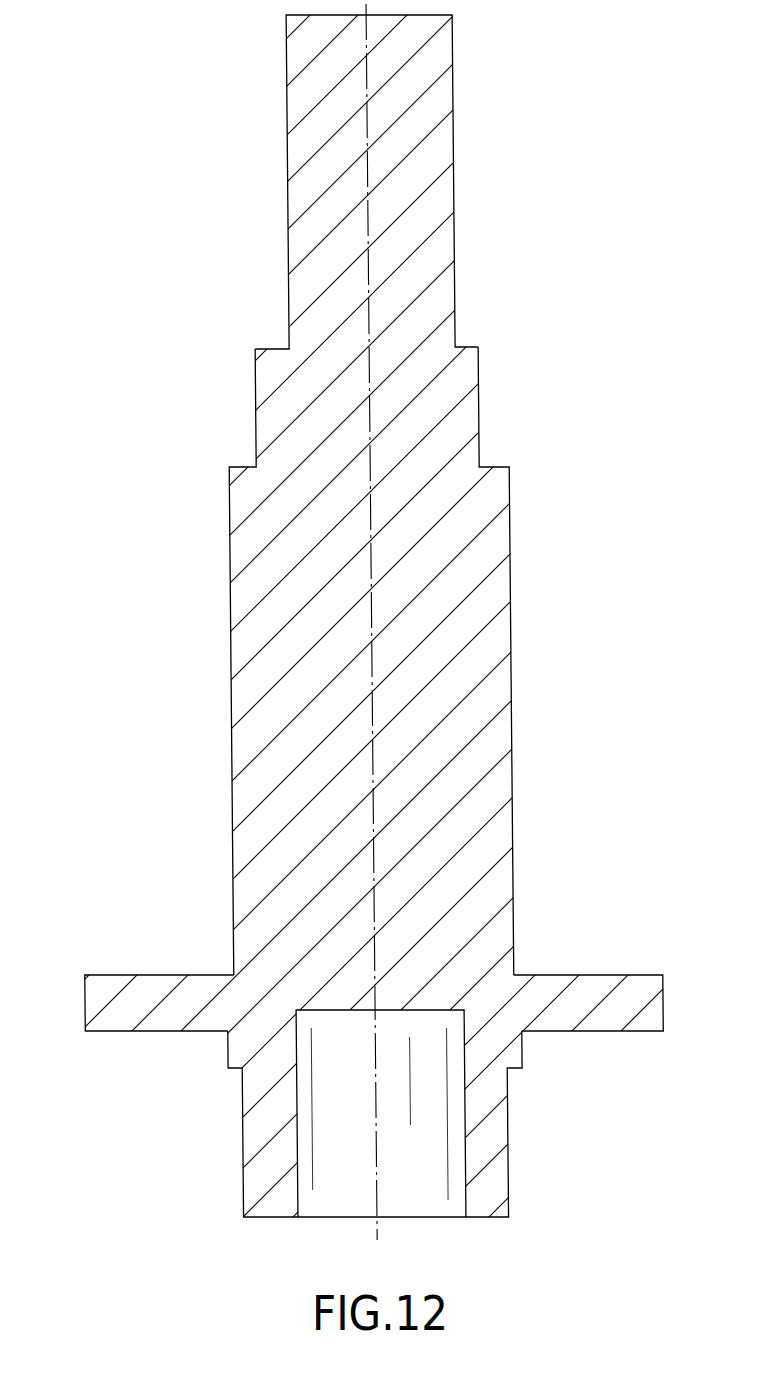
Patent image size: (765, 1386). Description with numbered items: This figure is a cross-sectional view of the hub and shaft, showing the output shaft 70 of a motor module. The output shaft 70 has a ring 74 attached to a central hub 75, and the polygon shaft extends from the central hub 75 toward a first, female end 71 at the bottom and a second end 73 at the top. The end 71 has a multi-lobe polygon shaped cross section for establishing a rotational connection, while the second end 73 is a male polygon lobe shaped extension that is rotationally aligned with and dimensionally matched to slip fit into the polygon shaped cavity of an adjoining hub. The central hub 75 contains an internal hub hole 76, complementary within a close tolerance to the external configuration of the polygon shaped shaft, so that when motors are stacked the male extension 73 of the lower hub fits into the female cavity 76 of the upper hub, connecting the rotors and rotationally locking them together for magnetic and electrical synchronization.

The output shaft 70 is at (173, 628).
The male polygon shaped extension 73 is at (286, 15).
The central hub 75 is at (513, 875).
The ring 74 is at (85, 1002).
The female end 71 is at (493, 1217).
The hub hole 76 is at (298, 1197).